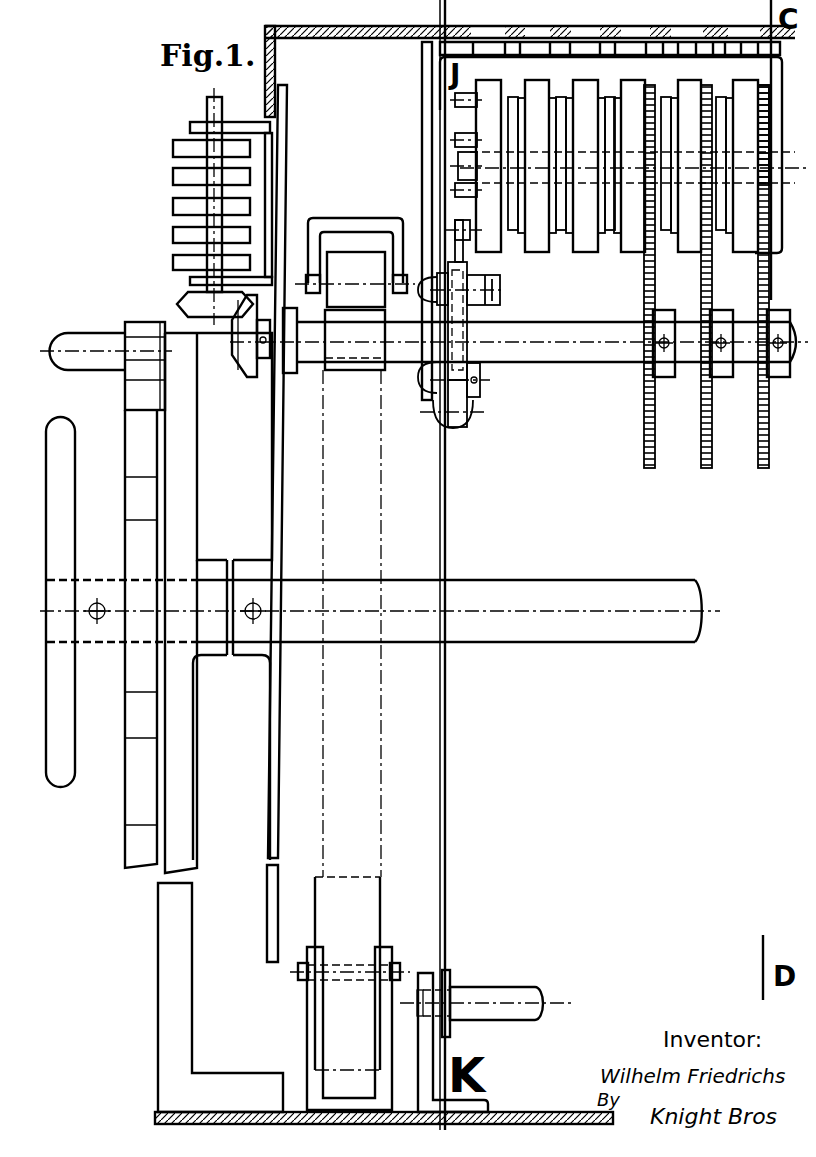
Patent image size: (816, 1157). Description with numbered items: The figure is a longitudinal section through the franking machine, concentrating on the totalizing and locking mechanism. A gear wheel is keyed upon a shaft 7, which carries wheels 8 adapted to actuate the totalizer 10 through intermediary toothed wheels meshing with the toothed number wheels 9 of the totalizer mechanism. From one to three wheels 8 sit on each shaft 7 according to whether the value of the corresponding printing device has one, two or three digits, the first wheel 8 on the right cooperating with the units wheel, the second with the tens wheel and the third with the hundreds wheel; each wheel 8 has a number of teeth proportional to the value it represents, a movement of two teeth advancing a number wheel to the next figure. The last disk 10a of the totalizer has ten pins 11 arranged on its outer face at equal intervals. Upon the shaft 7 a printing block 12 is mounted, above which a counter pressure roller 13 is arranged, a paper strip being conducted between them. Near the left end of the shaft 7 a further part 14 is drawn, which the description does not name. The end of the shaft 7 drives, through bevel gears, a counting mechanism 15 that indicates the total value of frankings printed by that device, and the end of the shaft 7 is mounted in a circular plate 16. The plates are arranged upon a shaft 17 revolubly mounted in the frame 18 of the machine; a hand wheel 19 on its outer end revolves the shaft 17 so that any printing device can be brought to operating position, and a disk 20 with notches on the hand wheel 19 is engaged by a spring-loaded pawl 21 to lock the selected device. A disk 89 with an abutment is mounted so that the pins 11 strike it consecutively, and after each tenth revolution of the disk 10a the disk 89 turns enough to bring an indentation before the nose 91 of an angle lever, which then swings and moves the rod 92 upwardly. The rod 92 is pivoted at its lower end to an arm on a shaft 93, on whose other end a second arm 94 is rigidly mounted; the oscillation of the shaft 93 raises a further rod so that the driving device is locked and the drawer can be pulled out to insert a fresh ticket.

The shaft 7 is at (577, 333).
The wheels 8 is at (752, 468).
The toothed number wheels 9 is at (767, 82).
The totalizer 10 is at (575, 75).
The last disk of the totalizer 10a is at (478, 84).
The pins 11 is at (455, 228).
The printing block 12 is at (357, 348).
The counter pressure roller 13 is at (372, 268).
The bracket 14 is at (266, 363).
The counting mechanism 15 is at (195, 207).
The circular plate 16 is at (270, 787).
The shaft 17 is at (613, 618).
The frame 18 is at (172, 762).
The hand wheel 19 is at (58, 772).
The disk with notches 20 is at (147, 497).
The pawl 21 is at (145, 331).
The disk 89 is at (464, 256).
The nose 91 is at (470, 398).
The rod 92 is at (442, 557).
The shaft 93 is at (505, 1000).
The second arm 94 is at (446, 972).